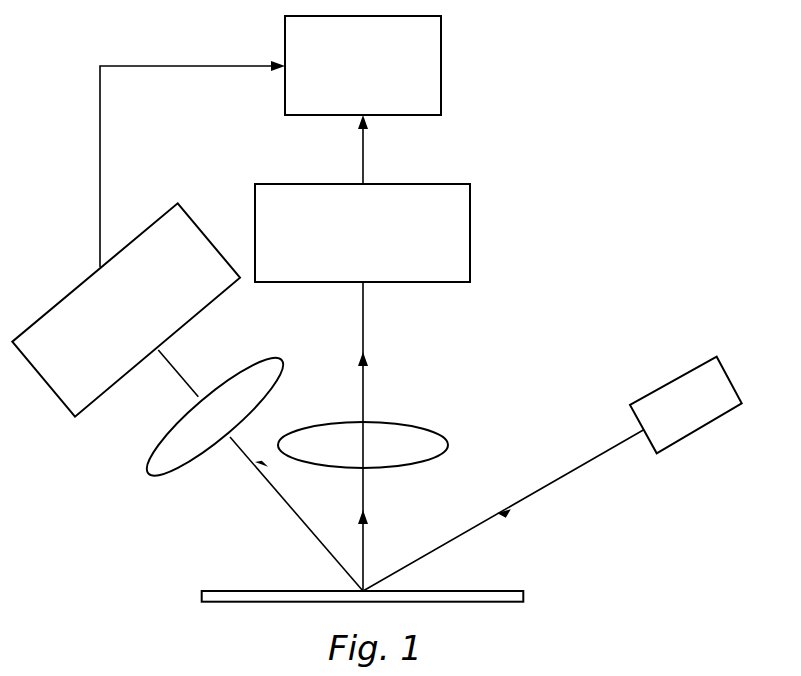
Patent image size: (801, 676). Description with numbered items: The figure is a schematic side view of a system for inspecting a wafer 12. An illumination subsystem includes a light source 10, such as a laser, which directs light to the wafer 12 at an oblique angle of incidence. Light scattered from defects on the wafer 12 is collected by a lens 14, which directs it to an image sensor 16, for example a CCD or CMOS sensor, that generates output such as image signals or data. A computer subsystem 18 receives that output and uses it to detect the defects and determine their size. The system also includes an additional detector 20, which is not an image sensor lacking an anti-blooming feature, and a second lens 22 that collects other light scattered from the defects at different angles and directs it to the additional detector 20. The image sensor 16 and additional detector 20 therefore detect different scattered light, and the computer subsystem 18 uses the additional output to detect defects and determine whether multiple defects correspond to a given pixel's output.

The light source 10 is at (732, 383).
The wafer 12 is at (503, 591).
The lens 14 is at (413, 425).
The image sensor 16 is at (378, 259).
The computer subsystem 18 is at (349, 107).
The additional detector 20 is at (126, 309).
The lens 22 is at (263, 362).